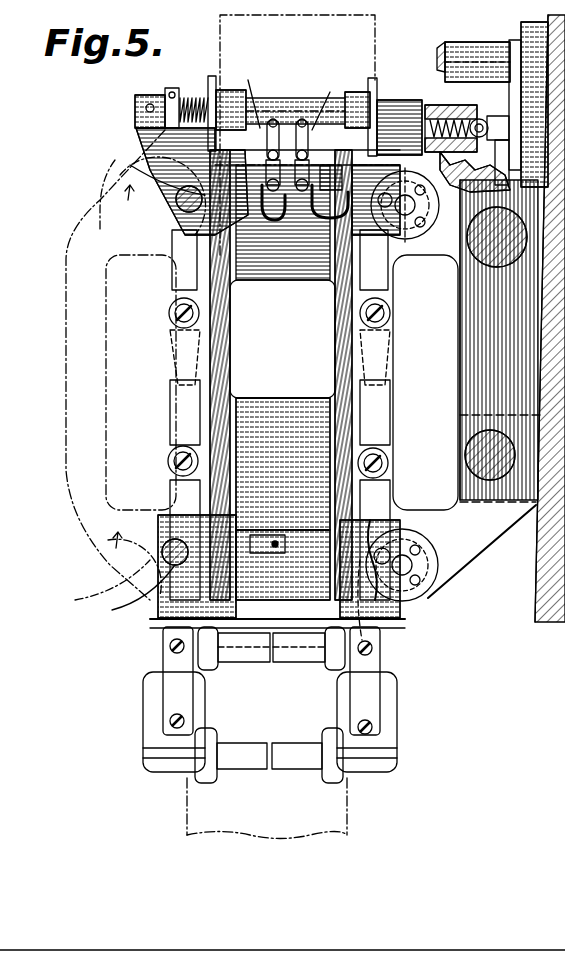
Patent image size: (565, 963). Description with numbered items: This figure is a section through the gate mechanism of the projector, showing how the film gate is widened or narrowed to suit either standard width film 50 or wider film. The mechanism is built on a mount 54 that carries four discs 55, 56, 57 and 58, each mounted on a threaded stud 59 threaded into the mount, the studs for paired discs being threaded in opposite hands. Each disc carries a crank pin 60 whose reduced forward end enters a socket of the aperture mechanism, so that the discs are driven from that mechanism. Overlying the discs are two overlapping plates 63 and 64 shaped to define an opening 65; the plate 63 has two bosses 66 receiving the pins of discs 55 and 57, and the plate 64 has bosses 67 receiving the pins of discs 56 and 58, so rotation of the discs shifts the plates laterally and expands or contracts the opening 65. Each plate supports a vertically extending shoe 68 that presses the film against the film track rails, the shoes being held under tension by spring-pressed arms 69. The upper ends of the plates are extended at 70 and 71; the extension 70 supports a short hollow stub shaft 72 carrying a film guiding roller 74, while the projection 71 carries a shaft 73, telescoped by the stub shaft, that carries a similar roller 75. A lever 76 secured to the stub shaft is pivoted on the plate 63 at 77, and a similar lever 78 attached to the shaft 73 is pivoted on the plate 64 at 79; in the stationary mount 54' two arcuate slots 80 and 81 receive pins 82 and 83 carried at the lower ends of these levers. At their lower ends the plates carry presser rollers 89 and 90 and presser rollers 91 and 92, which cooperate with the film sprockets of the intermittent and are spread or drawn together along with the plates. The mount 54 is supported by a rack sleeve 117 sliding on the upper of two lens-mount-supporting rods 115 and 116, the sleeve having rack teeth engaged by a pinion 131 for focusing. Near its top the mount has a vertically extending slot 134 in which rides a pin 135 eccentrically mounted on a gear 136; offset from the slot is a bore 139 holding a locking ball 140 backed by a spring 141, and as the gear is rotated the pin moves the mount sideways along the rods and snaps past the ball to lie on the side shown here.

The section of standard width film 50 is at (220, 17).
The mount 54 is at (277, 365).
The stationary mount 54' is at (266, 320).
The disc 55 is at (128, 168).
The disc 56 is at (400, 265).
The disc 57 is at (96, 583).
The disc 58 is at (385, 600).
The threaded stud 59 is at (440, 215).
The crank pin 60 is at (178, 201).
The overlapping plate 63 is at (172, 400).
The overlapping plate 64 is at (393, 392).
The opening or aperture 65 is at (282, 339).
The boss 66 is at (130, 165).
The boss 67 is at (372, 618).
The shoe 68 is at (210, 370).
The spring-pressed arm 69 is at (190, 275).
The extension 70 is at (140, 130).
The extension 71 is at (400, 100).
The hollow stub shaft 72 is at (195, 98).
The shaft 73 is at (372, 78).
The film guiding roller 74 is at (228, 90).
The film guiding roller 75 is at (356, 92).
The lever 76 is at (274, 120).
The pivot 77 is at (268, 160).
The lever 78 is at (303, 120).
The pivot 79 is at (304, 160).
The arcuate slot 80 is at (268, 225).
The arcuate slot 81 is at (318, 225).
The pin 82 is at (249, 94).
The pin 83 is at (328, 101).
The presser roller 89 is at (210, 670).
The presser roller 90 is at (215, 742).
The presser roller 91 is at (330, 668).
The presser roller 92 is at (322, 742).
The lens-mount-supporting rod 115 is at (497, 268).
The lens-mount-supporting rod 116 is at (500, 438).
The rack sleeve 117 is at (499, 340).
The pinion 131 is at (548, 18).
The vertically extending slot 134 is at (477, 152).
The pin 135 is at (484, 120).
The gear 136 is at (525, 40).
The bore 139 is at (470, 82).
The locking ball 140 is at (460, 45).
The spring 141 is at (438, 110).